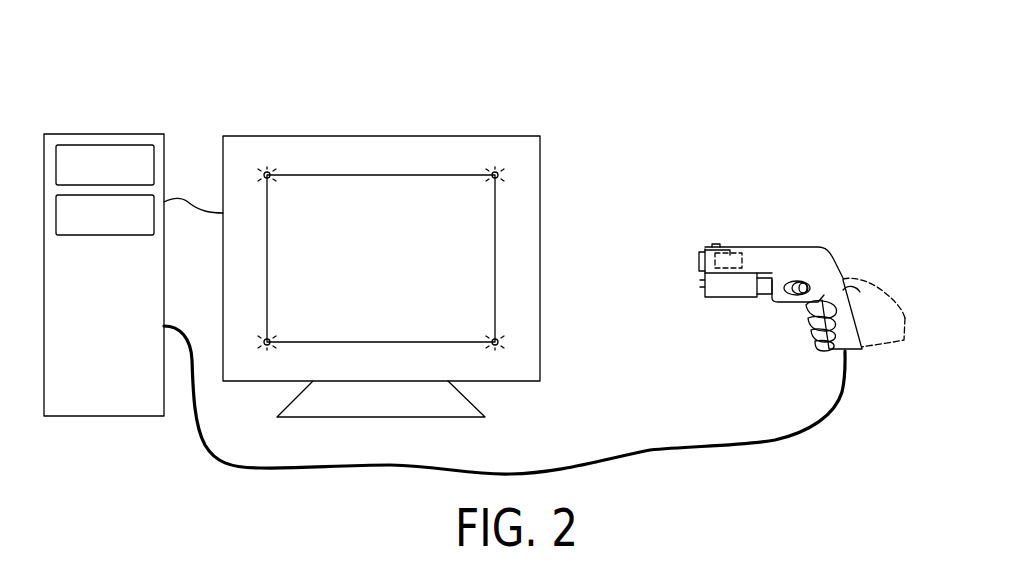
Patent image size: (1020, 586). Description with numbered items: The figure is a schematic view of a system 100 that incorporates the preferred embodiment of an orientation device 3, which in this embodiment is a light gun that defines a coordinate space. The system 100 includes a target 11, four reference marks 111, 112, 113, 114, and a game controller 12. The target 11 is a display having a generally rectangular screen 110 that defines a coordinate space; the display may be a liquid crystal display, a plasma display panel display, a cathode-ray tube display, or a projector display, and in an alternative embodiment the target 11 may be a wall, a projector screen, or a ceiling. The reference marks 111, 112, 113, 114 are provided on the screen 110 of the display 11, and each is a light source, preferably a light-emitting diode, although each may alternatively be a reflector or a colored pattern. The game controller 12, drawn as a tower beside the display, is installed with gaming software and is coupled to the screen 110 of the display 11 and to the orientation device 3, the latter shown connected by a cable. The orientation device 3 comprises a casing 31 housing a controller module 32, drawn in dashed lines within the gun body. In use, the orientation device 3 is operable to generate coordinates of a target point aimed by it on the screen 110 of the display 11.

The system 100 is at (150, 97).
The game controller 12 is at (74, 133).
The target 11 is at (370, 135).
The screen 110 is at (412, 195).
The reference mark 111 is at (267, 170).
The reference mark 112 is at (500, 175).
The reference mark 113 is at (500, 342).
The reference mark 114 is at (268, 347).
The orientation device 3 is at (782, 230).
The casing 31 is at (723, 247).
The controller module 32 is at (737, 252).